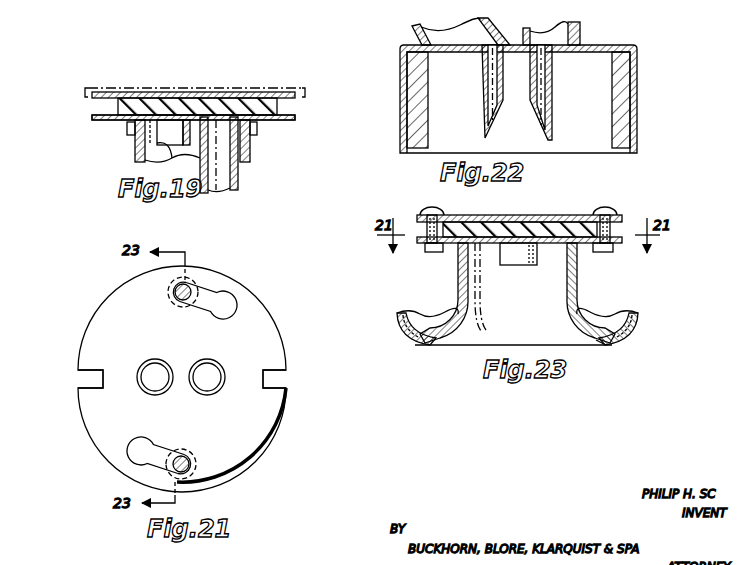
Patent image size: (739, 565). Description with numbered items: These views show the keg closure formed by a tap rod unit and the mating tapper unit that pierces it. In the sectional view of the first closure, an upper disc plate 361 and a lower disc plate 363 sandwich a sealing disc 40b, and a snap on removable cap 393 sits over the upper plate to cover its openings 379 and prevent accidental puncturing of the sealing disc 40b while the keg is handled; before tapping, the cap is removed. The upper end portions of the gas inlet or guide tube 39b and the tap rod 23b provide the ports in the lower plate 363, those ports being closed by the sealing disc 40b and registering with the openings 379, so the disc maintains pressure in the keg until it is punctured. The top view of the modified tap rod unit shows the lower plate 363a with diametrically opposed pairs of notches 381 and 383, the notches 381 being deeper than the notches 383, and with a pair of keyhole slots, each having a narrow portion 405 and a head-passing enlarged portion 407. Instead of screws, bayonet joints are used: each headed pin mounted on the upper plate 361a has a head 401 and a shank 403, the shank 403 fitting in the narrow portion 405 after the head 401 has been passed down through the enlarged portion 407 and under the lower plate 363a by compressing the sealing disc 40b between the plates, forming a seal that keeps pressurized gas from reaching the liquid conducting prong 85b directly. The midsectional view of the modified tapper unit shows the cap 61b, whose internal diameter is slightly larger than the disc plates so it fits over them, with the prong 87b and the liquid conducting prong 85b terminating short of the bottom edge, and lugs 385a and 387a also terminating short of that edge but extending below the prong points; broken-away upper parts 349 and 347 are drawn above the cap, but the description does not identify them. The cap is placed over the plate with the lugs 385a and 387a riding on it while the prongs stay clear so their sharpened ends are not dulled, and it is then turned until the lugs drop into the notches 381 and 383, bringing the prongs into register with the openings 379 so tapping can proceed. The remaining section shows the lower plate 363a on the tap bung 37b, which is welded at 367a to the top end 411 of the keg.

In FIG. 19, the snap on removable cap 393 is at (113, 87).
In FIG. 19, the upper disc plate 361 is at (246, 92).
In FIG. 19, the openings 379 is at (220, 92).
In FIG. 19, the sealing disc 40b is at (120, 108).
In FIG. 23, the sealing disc 40b is at (505, 215).
In FIG. 19, the lower disc plate 363 is at (290, 121).
In FIG. 19, the gas inlet or guide tube 39b is at (135, 152).
In FIG. 19, the tap rod 23b is at (240, 178).
In FIG. 21, the lower plate 363a is at (255, 332).
In FIG. 23, the lower plate 363a is at (552, 246).
In FIG. 21, the notches 381 is at (80, 380).
In FIG. 21, the notches 383 is at (282, 383).
In FIG. 21, the head-passing enlarged portion 407 is at (226, 293).
In FIG. 21, the narrow portion 405 is at (205, 290).
In FIG. 21, the shank 403 is at (175, 285).
In FIG. 23, the shank 403 is at (428, 215).
In FIG. 21, the head 401 is at (168, 290).
In FIG. 23, the head 401 is at (432, 252).
In FIG. 22, the cap 61b is at (638, 77).
In FIG. 22, the lug 385a is at (428, 95).
In FIG. 22, the lug 387a is at (626, 128).
In FIG. 22, the prong 87b is at (490, 128).
In FIG. 22, the liquid conducting prong 85b is at (553, 75).
In FIG. 22, the left fitting 349 is at (425, 26).
In FIG. 22, the right fitting 347 is at (566, 24).
In FIG. 23, the upper plate 361a is at (557, 214).
In FIG. 23, the tap bung 37b is at (566, 322).
In FIG. 23, the top end of the keg 411 is at (636, 334).
In FIG. 23, the weld 367a is at (604, 345).